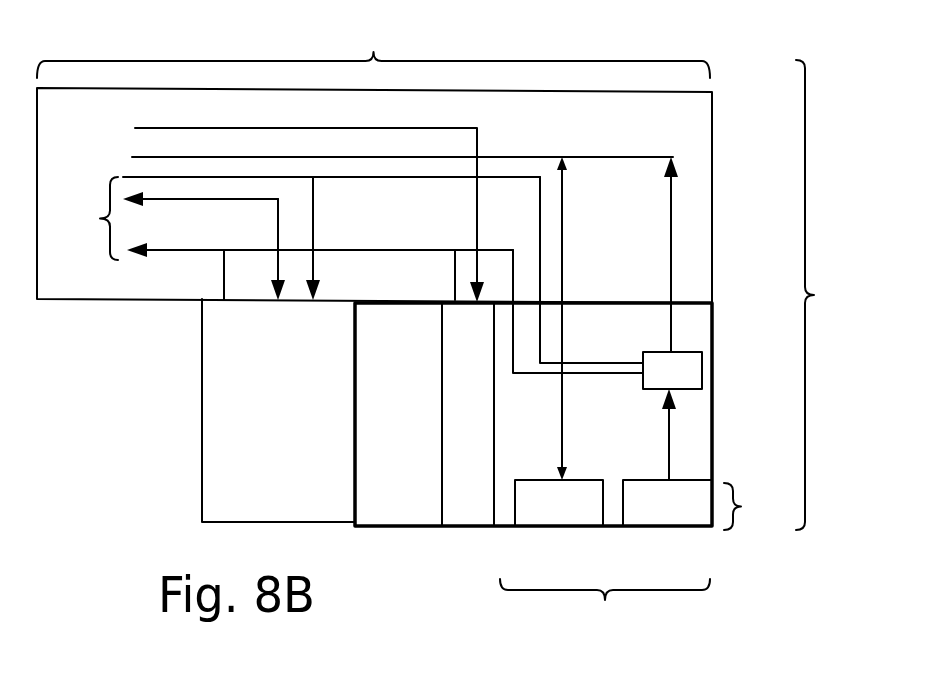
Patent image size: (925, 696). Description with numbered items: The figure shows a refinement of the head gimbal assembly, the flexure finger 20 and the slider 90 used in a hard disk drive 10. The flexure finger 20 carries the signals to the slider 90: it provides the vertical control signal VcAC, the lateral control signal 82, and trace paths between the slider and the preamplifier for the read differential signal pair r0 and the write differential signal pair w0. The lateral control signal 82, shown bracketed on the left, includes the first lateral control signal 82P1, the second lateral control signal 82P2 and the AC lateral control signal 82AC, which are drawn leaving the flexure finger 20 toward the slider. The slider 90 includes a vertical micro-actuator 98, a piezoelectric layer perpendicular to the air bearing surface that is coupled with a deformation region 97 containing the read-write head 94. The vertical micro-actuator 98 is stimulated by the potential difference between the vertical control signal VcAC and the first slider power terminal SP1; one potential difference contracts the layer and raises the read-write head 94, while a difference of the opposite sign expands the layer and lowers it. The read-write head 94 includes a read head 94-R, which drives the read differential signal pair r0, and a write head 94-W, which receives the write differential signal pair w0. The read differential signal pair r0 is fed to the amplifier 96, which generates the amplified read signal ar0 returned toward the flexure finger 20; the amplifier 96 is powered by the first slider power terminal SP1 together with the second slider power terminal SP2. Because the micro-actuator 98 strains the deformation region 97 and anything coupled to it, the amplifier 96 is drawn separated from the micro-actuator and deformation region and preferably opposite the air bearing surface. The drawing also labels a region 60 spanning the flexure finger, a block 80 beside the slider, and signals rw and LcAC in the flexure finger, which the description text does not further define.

The storage controller / integrated circuit portion 60 is at (373, 49).
The hard disk drive 10 is at (832, 295).
The flexure finger 20 is at (701, 120).
The write path / buffer block 80 is at (291, 518).
The slider 90 is at (392, 328).
The vertical micro-actuator 98 is at (468, 414).
The amplifier 96 is at (672, 370).
The write head 94-W is at (559, 503).
The read head 94-R is at (667, 503).
The read-write head 94 is at (753, 506).
The deformation region 97 is at (605, 606).
The vertical control signal VcAC is at (180, 128).
The read/write signal rw is at (145, 157).
The lateral control signal 82 is at (301, 218).
The latch command signal LcAC is at (232, 200).
The AC lateral control signal 82AC is at (280, 303).
The second lateral control signal 82P2 is at (307, 303).
The first lateral control signal 82P1 is at (223, 303).
The first slider power terminal SP1 is at (460, 300).
The second slider power terminal SP2 is at (538, 300).
The amplified read signal ar0 is at (671, 215).
The write differential signal pair w0 is at (563, 402).
The read differential signal pair r0 is at (692, 453).